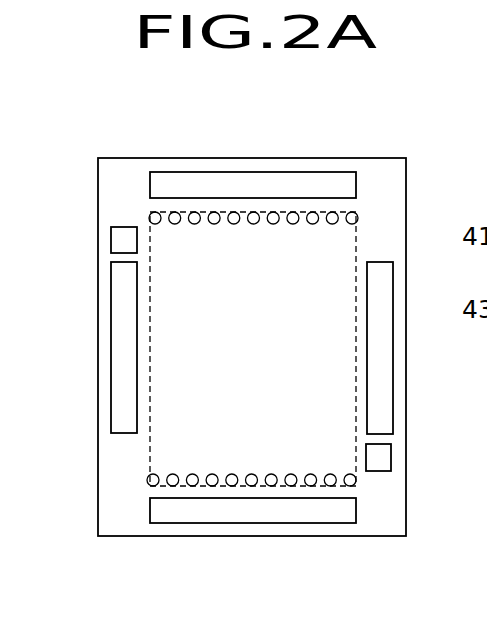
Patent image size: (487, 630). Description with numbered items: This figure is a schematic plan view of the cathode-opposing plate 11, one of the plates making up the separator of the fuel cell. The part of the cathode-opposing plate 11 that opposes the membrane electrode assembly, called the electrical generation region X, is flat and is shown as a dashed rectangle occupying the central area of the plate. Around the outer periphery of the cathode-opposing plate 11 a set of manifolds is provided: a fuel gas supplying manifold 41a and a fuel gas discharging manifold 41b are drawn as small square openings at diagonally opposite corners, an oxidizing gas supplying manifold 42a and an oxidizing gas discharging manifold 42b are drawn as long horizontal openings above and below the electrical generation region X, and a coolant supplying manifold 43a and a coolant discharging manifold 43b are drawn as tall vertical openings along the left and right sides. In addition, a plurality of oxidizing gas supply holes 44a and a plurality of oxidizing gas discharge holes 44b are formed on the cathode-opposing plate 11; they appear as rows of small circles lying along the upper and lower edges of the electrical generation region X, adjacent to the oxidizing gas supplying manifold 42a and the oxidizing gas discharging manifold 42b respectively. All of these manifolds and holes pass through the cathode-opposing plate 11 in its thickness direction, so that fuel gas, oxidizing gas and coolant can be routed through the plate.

The cathode-opposing plate 11 is at (125, 158).
The electrical generation region X is at (357, 247).
The fuel gas supplying manifold 41a is at (118, 240).
The fuel gas discharging manifold 41b is at (380, 461).
The oxidizing gas supplying manifold 42a is at (288, 190).
The oxidizing gas discharging manifold 42b is at (282, 512).
The coolant supplying manifold 43a is at (122, 343).
The coolant discharging manifold 43b is at (382, 378).
The oxidizing gas supply holes 44a is at (196, 214).
The oxidizing gas discharge holes 44b is at (196, 484).